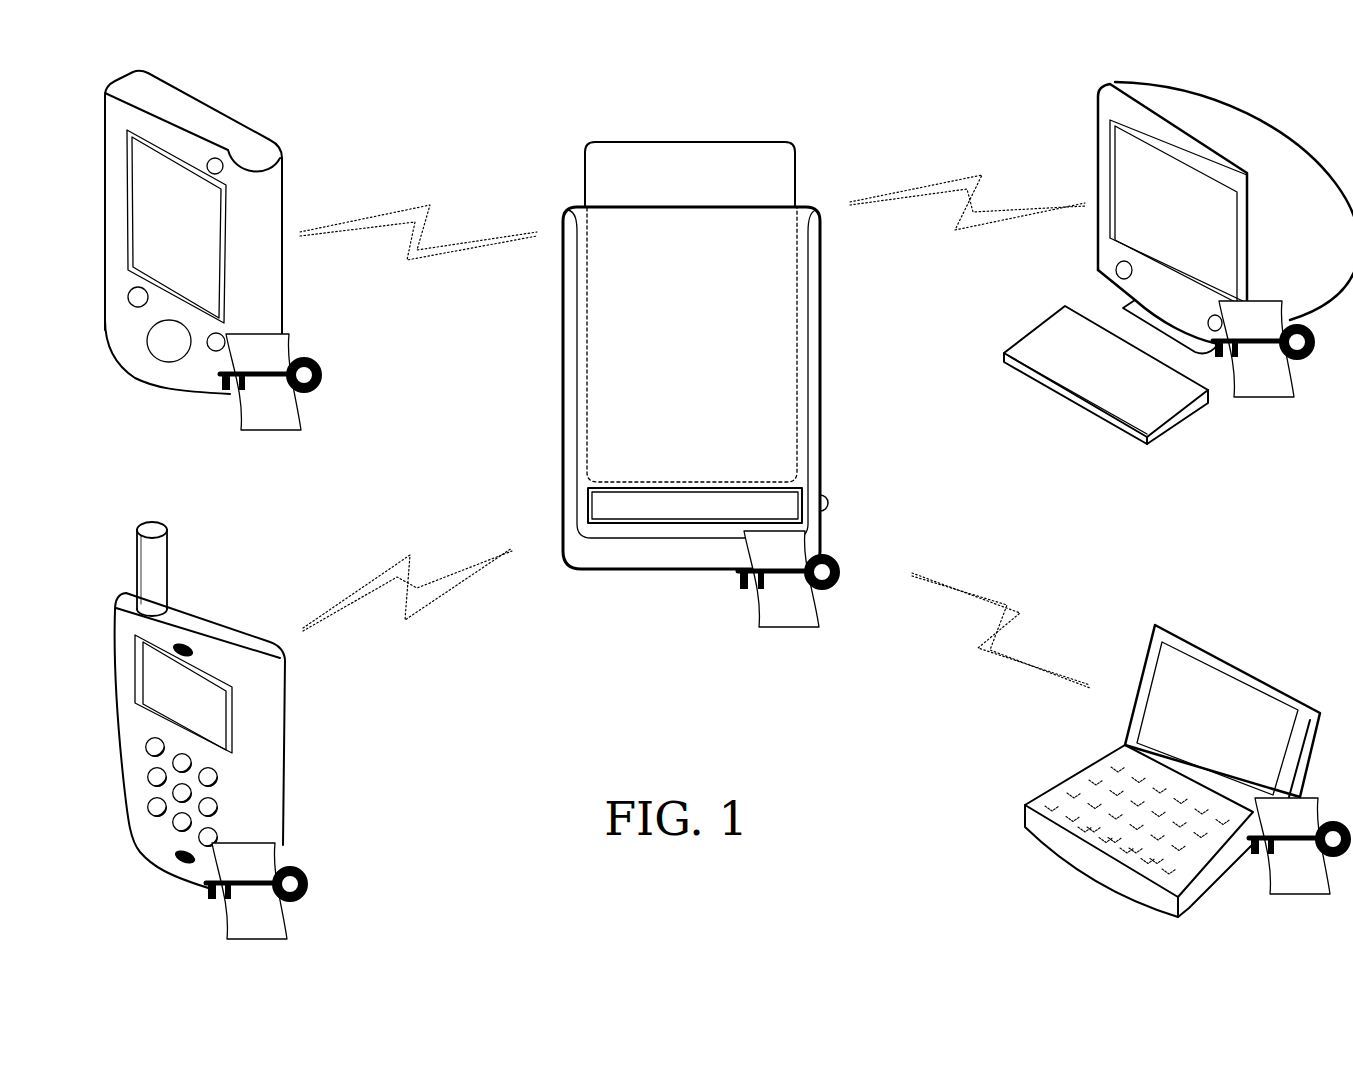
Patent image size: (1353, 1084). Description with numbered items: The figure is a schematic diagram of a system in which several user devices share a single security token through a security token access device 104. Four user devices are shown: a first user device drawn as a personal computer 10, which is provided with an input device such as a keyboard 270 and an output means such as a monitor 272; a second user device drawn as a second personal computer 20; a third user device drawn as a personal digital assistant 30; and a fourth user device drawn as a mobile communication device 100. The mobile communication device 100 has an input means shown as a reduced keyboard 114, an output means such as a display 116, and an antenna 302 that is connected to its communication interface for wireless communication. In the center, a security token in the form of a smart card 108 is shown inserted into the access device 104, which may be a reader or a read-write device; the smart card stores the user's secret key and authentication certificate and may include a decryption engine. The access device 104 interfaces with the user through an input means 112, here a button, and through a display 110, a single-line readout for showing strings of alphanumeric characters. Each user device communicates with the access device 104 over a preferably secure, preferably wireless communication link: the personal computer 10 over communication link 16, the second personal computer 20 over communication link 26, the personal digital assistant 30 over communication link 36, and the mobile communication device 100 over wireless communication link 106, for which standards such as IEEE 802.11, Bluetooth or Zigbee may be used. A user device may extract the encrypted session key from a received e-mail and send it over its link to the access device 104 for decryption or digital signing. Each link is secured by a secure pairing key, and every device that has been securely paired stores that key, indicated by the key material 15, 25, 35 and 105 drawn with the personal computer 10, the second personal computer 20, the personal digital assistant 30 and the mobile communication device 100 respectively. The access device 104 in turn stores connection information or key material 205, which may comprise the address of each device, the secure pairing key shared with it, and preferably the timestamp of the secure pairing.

The personal computer 10 is at (1097, 106).
The key material 15 is at (1261, 349).
The communication link 16 is at (967, 181).
The second personal computer 20 is at (1223, 672).
The key material 25 is at (1297, 846).
The communication link 26 is at (1001, 626).
The personal digital assistant 30 is at (219, 153).
The key material 35 is at (268, 382).
The communication link 36 is at (418, 212).
The mobile communication device 100 is at (285, 729).
The security token access device 104 is at (563, 398).
The key material 105 is at (254, 891).
The wireless communication link 106 is at (407, 572).
The smart card 108 is at (641, 142).
The display 110 is at (707, 524).
The input means 112 is at (830, 506).
The reduced keyboard 114 is at (155, 792).
The display 116 is at (172, 707).
The key material 205 is at (786, 579).
The keyboard 270 is at (1151, 417).
The monitor 272 is at (1156, 243).
The antenna 302 is at (137, 564).